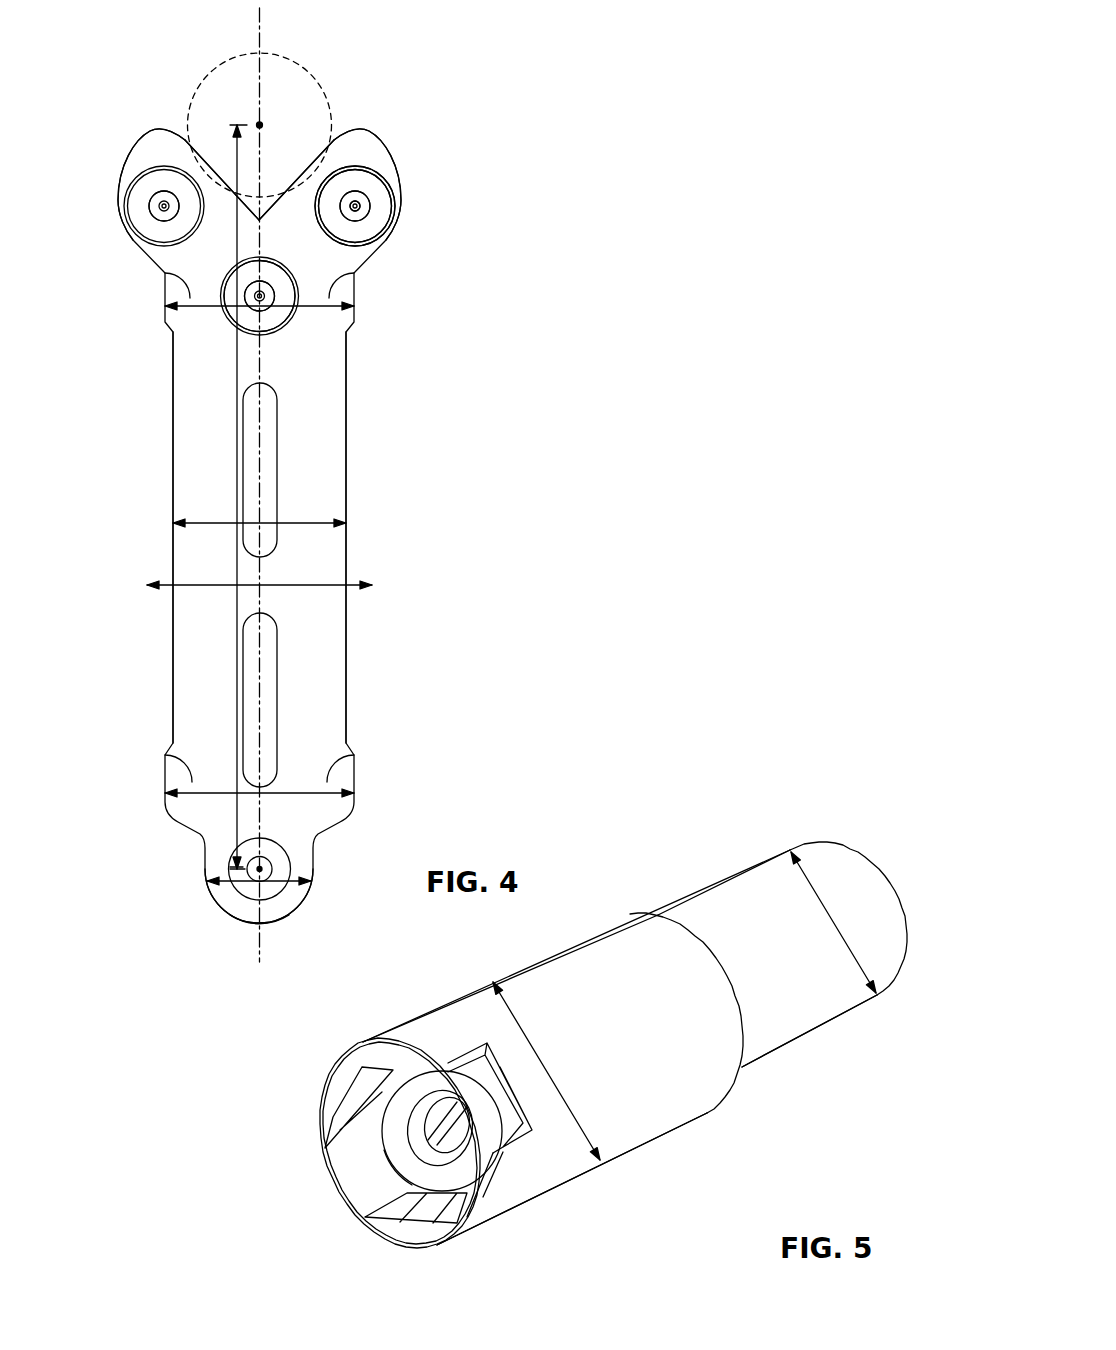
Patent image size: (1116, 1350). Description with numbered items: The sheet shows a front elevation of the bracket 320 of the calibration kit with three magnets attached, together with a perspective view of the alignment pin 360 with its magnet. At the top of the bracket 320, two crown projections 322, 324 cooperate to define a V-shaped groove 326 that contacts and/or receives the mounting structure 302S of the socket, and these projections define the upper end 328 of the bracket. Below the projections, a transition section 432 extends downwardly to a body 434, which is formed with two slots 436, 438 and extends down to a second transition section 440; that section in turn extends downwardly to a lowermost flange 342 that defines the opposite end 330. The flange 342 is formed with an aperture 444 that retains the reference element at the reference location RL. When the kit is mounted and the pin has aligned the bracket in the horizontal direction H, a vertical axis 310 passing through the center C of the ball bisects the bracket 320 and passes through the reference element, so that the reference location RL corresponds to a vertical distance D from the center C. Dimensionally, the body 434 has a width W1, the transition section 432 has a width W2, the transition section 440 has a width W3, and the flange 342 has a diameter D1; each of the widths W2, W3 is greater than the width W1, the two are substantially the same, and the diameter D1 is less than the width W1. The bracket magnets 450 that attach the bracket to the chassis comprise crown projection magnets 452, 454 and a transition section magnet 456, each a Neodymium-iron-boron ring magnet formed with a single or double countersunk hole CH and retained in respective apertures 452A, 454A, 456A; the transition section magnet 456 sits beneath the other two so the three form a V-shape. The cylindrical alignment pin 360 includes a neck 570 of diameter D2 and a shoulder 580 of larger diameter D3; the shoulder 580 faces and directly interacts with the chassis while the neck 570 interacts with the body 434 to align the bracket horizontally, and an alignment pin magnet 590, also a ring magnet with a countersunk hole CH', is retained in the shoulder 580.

In FIG. 4, the mounting structure 302S is at (262, 52).
In FIG. 4, the center C is at (262, 124).
In FIG. 4, the vertical axis 310 is at (260, 710).
In FIG. 4, the bracket 320 is at (493, 176).
In FIG. 4, the crown projection 322 is at (142, 157).
In FIG. 4, the crown projection 324 is at (373, 148).
In FIG. 4, the V-shaped groove 326 is at (180, 133).
In FIG. 4, the end 328 is at (360, 128).
In FIG. 4, the end 330 is at (273, 923).
In FIG. 4, the lowermost flange 342 is at (233, 902).
In FIG. 4, the transition section 432 is at (338, 297).
In FIG. 4, the body 434 is at (325, 486).
In FIG. 4, the slot 436 is at (277, 430).
In FIG. 4, the slot 438 is at (277, 660).
In FIG. 4, the transition section 440 is at (335, 778).
In FIG. 4, the aperture 444 is at (273, 874).
In FIG. 4, the bracket magnets 450 is at (393, 203).
In FIG. 4, the crown projection magnet 452 is at (148, 198).
In FIG. 4, the aperture 452A is at (150, 207).
In FIG. 4, the crown projection magnet 454 is at (383, 207).
In FIG. 4, the aperture 454A is at (367, 197).
In FIG. 4, the transition section magnet 456 is at (280, 313).
In FIG. 4, the aperture 456A is at (273, 333).
In FIG. 4, the countersunk hole CH is at (396, 225).
In FIG. 4, the width W1 is at (322, 523).
In FIG. 4, the width W2 is at (165, 273).
In FIG. 4, the width W3 is at (167, 756).
In FIG. 4, the horizontal direction H is at (192, 585).
In FIG. 4, the vertical distance D is at (237, 440).
In FIG. 4, the diameter D1 is at (275, 885).
In FIG. 4, the reference location RL is at (273, 867).
In FIG. 5, the alignment pin 360 is at (840, 792).
In FIG. 5, the neck 570 is at (742, 897).
In FIG. 5, the shoulder 580 is at (607, 970).
In FIG. 5, the alignment pin magnet 590 is at (412, 1093).
In FIG. 5, the diameter D2 is at (832, 928).
In FIG. 5, the diameter D3 is at (545, 1060).
In FIG. 5, the countersunk hole CH' is at (418, 1099).